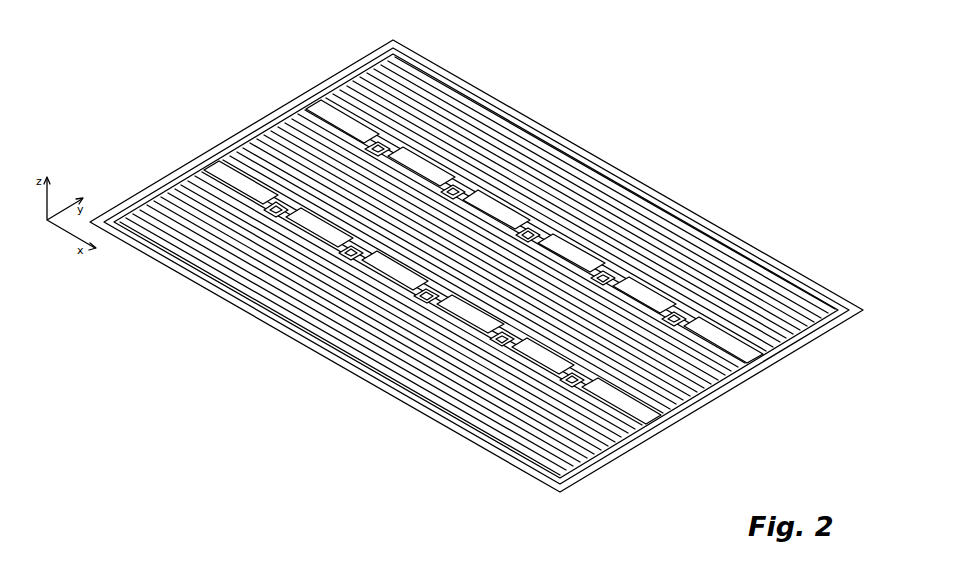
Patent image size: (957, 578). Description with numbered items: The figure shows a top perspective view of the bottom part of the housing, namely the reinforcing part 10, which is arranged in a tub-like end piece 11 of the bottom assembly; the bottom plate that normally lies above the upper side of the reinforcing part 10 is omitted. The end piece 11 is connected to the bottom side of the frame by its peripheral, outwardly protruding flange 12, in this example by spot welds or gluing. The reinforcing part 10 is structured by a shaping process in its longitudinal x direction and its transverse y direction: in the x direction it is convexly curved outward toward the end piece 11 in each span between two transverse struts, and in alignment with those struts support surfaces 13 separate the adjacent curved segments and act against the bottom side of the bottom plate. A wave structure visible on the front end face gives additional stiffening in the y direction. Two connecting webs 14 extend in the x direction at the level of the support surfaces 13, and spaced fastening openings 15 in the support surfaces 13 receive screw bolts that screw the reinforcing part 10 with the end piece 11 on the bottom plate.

The reinforcing part 10 is at (490, 256).
The end piece 11 is at (753, 246).
The flange 12 is at (832, 292).
The support surfaces 13 is at (660, 237).
The connecting webs 14 is at (304, 95).
The fastening openings 15 is at (451, 182).